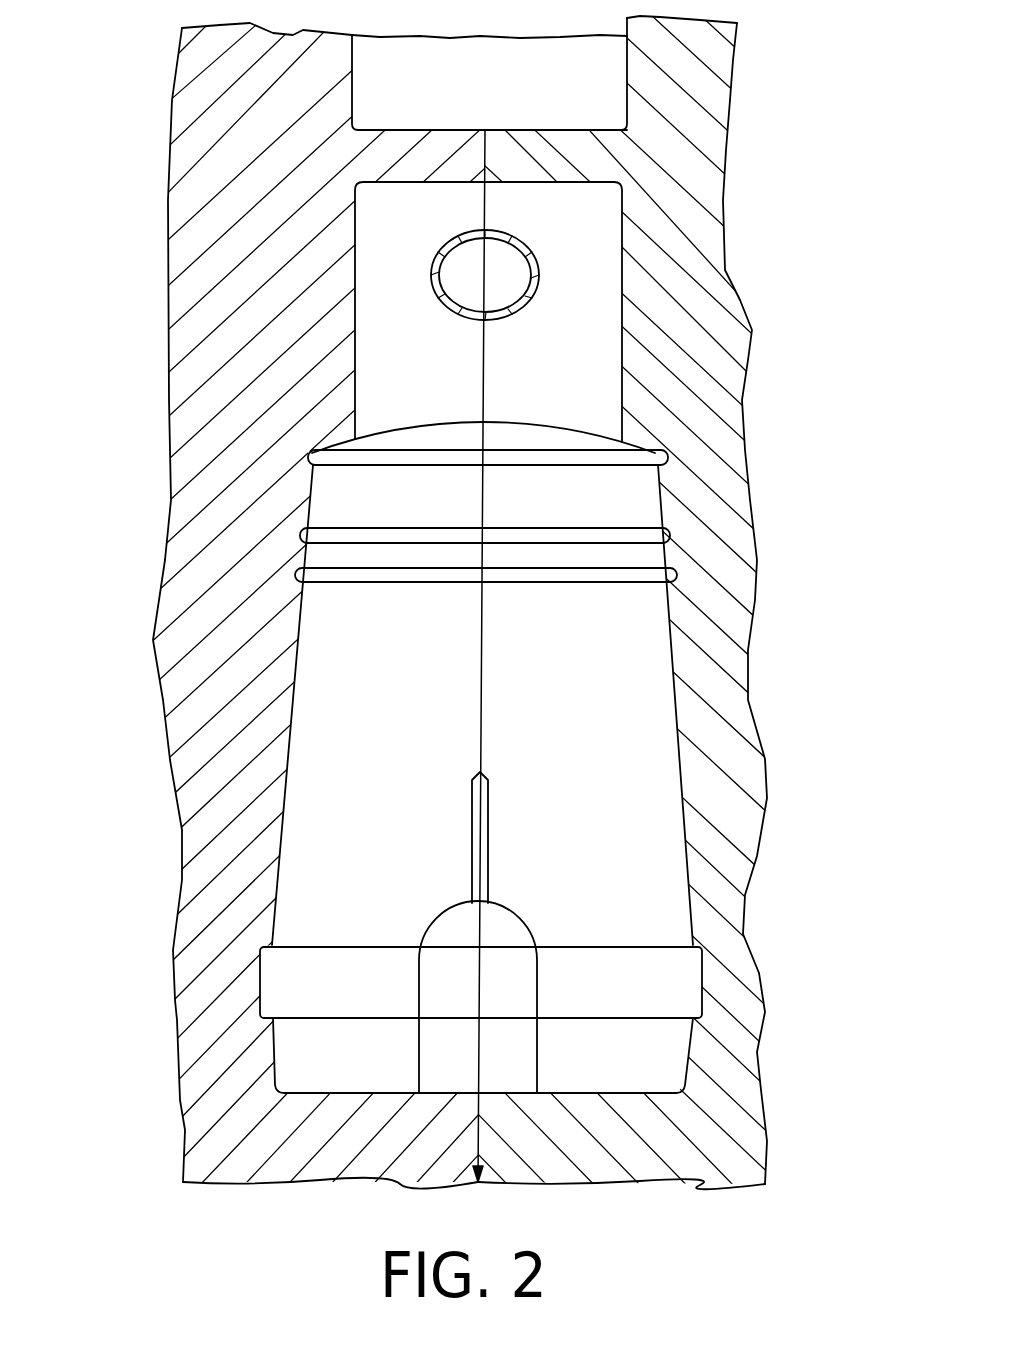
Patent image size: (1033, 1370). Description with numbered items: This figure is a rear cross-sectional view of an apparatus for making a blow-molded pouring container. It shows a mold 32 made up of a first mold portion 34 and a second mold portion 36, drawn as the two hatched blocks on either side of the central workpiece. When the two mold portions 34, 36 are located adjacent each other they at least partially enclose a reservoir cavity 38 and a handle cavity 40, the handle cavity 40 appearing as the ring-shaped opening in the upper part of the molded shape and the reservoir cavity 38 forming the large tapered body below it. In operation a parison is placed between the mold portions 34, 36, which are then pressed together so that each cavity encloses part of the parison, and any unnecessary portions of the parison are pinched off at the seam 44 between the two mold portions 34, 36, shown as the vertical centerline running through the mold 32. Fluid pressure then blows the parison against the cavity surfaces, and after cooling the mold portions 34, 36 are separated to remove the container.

The mold 32 is at (463, 685).
The first mold portion 34 is at (168, 535).
The second mold portion 36 is at (755, 530).
The reservoir cavity 38 is at (550, 715).
The handle cavity 40 is at (512, 289).
The seam 44 is at (483, 630).